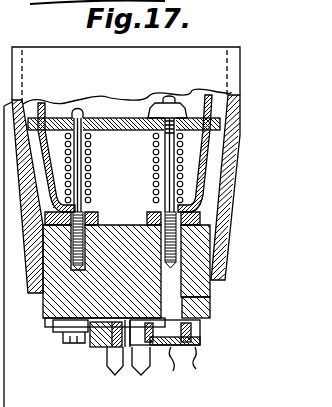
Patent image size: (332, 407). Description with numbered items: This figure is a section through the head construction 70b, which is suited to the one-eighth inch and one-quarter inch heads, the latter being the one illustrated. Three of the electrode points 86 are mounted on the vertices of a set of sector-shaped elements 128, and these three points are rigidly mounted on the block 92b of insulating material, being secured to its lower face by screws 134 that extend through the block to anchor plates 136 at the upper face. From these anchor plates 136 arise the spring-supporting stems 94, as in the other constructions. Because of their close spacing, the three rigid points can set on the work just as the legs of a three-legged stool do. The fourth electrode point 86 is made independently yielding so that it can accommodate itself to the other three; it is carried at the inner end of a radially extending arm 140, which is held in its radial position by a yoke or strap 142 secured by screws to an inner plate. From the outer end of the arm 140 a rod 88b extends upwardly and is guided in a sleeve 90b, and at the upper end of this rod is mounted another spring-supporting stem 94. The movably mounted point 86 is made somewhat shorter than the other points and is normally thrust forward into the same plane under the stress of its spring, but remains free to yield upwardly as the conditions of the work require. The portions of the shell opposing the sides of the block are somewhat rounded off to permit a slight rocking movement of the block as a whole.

The spring-supporting stem 94 is at (83, 160).
The anchor plate 136 is at (96, 216).
The construction 70b is at (247, 140).
The rod 88b is at (208, 277).
The sleeve 90b is at (206, 306).
The block 92b is at (207, 318).
The sector-shaped element 128 is at (58, 323).
The screw 134 is at (72, 343).
The electrode point 86 is at (121, 375).
The yoke or strap 142 is at (181, 372).
The radially extending arm 140 is at (211, 365).